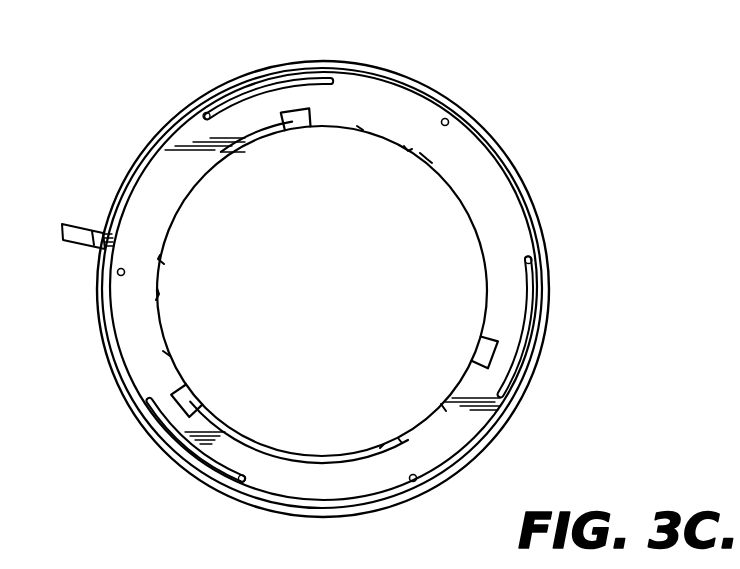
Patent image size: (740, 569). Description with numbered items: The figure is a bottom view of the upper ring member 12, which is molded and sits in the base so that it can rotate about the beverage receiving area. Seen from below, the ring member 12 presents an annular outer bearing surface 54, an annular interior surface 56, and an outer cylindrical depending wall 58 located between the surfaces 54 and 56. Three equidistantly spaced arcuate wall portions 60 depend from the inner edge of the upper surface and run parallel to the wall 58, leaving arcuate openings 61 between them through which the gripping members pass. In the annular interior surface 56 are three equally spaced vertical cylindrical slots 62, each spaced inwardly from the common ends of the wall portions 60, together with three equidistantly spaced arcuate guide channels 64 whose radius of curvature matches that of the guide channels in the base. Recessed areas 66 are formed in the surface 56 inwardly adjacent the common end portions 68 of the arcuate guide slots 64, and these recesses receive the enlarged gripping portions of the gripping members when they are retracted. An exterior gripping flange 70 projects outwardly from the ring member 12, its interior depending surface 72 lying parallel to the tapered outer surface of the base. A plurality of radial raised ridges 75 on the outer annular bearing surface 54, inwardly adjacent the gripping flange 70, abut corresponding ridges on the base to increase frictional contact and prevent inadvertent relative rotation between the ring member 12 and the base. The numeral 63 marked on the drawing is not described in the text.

The upper ring member 12 is at (548, 98).
The annular outer bearing surface 54 is at (432, 96).
The annular interior surface 56 is at (345, 95).
The outer cylindrical depending wall 58 is at (387, 66).
The arcuate wall portions 60 is at (194, 185).
The arcuate openings 61 is at (360, 122).
The vertical cylindrical slots 62 is at (449, 119).
The clip hook end 63 is at (202, 110).
The arcuate guide channels 64 is at (257, 85).
The recessed areas 66 is at (302, 130).
The common end portions 68 is at (328, 78).
The exterior gripping flange 70 is at (67, 228).
The interior depending surface 72 is at (92, 232).
The radial raised ridges 75 is at (102, 250).